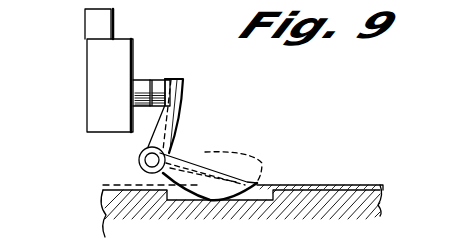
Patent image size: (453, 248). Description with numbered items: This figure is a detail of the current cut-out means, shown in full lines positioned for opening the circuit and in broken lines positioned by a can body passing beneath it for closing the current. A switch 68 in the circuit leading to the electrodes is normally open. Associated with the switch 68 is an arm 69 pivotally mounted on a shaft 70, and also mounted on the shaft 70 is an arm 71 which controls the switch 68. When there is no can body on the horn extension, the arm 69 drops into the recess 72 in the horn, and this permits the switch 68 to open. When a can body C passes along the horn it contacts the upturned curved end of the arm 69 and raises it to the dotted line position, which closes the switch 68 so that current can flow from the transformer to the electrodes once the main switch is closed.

The switch 68 is at (103, 81).
The arm 69 is at (215, 184).
The shaft 70 is at (167, 154).
The arm 71 is at (178, 107).
The recess 72 is at (257, 197).
The can body C is at (329, 185).